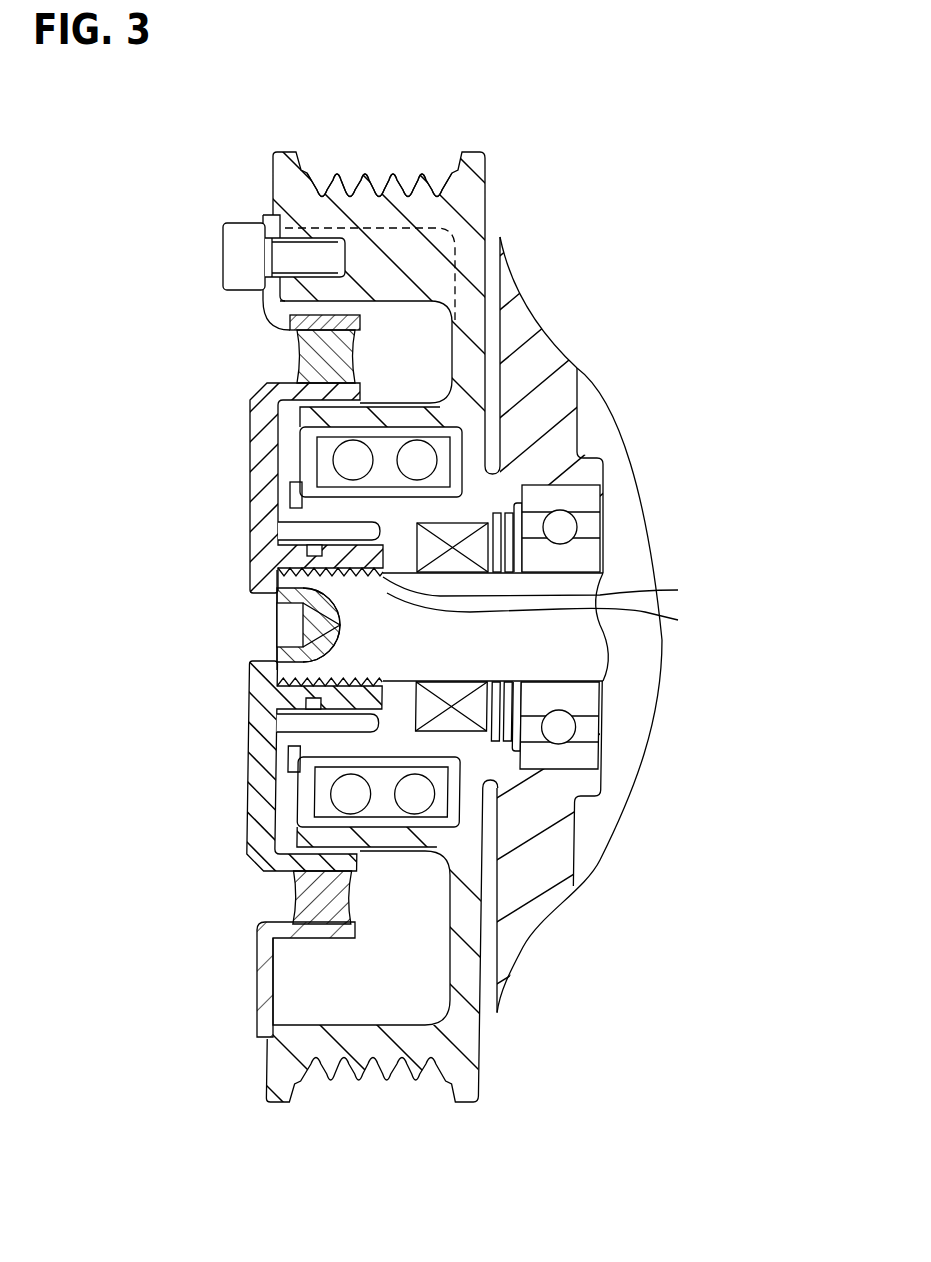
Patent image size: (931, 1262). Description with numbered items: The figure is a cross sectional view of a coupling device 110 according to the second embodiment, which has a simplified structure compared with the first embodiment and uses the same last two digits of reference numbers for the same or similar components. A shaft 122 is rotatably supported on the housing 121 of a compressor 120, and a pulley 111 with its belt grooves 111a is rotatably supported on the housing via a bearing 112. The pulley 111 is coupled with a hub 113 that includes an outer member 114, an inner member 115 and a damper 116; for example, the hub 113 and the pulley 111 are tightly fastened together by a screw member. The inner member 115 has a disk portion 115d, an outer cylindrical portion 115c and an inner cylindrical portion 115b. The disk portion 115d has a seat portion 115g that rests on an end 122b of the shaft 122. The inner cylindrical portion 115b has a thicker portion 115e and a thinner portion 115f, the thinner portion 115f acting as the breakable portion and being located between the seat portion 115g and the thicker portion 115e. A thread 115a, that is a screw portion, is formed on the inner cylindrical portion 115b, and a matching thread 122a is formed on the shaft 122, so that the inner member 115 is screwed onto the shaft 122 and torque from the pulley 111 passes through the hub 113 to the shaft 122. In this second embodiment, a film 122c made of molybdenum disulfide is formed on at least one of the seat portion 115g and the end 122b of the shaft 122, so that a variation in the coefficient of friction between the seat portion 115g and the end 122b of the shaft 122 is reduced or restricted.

The coupling device 110 is at (371, 606).
The pulley 111 is at (371, 606).
The belt grooves 111a is at (437, 176).
The bearing 112 is at (440, 407).
The hub 113 is at (230, 626).
The outer member 114 is at (264, 307).
The inner member 115 is at (367, 627).
The thread 115a is at (558, 591).
The inner cylindrical portion 115b is at (333, 537).
The outer cylindrical portion 115c is at (290, 378).
The disk portion 115d is at (249, 455).
The thicker portion 115e is at (277, 652).
The thinner portion 115f is at (280, 700).
The seat portion 115g is at (280, 574).
The damper 116 is at (293, 338).
The compressor 120 is at (583, 388).
The housing 121 is at (528, 480).
The shaft 122 is at (442, 629).
The thread 122a is at (545, 637).
The end of the shaft 122b is at (280, 596).
The film 122c is at (280, 679).